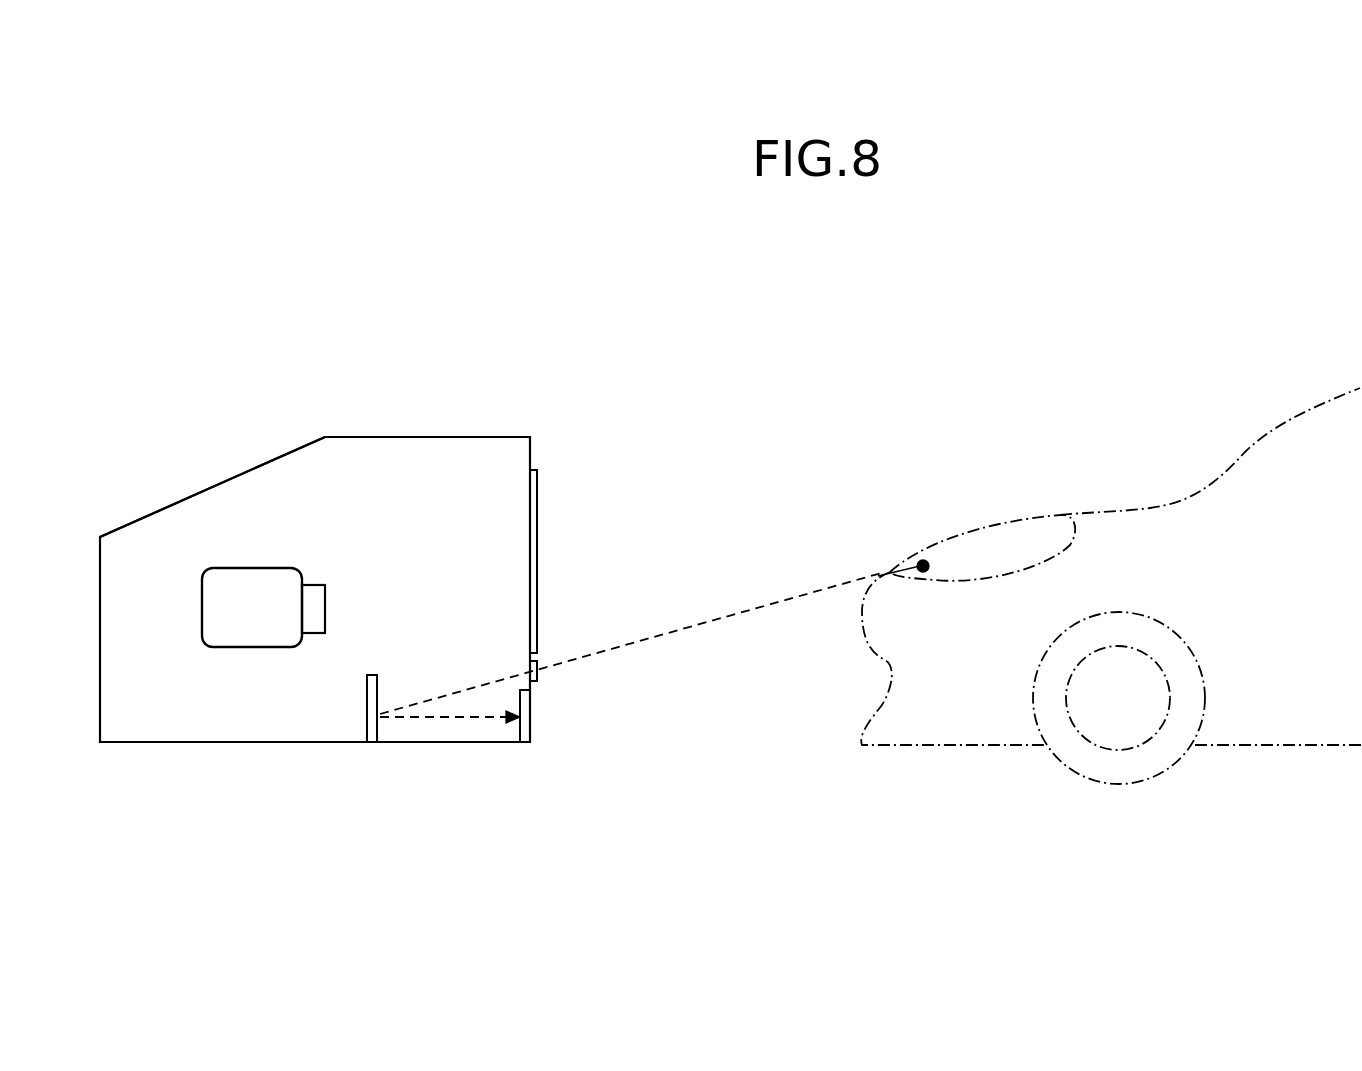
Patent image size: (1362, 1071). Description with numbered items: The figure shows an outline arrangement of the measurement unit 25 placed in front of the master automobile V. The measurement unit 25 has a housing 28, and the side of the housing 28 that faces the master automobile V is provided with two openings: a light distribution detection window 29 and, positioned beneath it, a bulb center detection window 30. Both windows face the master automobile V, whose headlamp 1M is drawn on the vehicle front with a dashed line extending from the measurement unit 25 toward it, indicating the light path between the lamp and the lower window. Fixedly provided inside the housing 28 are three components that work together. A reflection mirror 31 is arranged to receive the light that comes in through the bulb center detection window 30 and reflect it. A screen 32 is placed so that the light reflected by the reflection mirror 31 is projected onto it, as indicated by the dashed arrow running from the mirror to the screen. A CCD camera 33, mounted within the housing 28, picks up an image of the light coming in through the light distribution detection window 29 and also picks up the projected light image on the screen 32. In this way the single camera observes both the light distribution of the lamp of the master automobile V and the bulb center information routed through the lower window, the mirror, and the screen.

The measurement unit 25 is at (252, 457).
The housing 28 is at (146, 521).
The light distribution detection window 29 is at (535, 517).
The bulb center detection window 30 is at (538, 667).
The reflection mirror 31 is at (367, 700).
The screen 32 is at (520, 731).
The CCD camera 33 is at (244, 581).
The headlamp 1M is at (1001, 535).
The master automobile V is at (1284, 426).